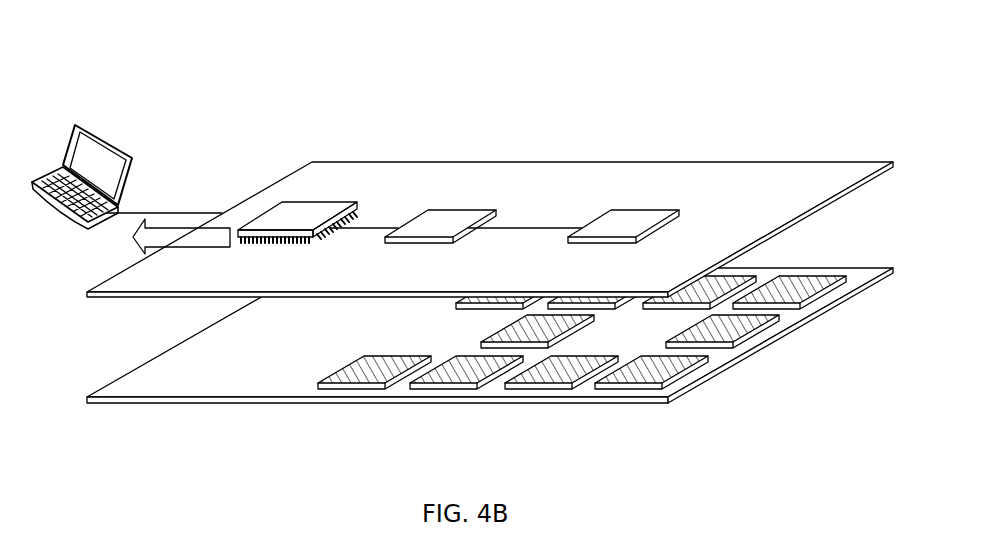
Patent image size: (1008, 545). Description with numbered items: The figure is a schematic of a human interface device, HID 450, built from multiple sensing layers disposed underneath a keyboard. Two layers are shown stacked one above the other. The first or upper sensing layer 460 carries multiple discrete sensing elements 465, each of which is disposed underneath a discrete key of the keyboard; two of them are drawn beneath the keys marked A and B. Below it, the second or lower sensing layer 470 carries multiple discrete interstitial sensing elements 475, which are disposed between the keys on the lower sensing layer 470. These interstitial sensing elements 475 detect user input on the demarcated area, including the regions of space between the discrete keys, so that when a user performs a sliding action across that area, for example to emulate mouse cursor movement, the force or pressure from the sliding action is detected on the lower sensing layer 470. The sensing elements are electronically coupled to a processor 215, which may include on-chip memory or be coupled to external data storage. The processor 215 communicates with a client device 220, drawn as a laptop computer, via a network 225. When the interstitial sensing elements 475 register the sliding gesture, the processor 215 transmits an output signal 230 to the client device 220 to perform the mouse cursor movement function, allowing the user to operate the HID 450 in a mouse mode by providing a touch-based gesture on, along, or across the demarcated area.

The HID 450 is at (160, 82).
The client device 220 is at (103, 133).
The network 225 is at (118, 213).
The output signal 230 is at (205, 236).
The processor 215 is at (335, 202).
The upper sensing layer 460 is at (768, 162).
The sensing elements 465 is at (457, 208).
The lower sensing layer 470 is at (780, 336).
The interstitial sensing elements 475 is at (665, 430).